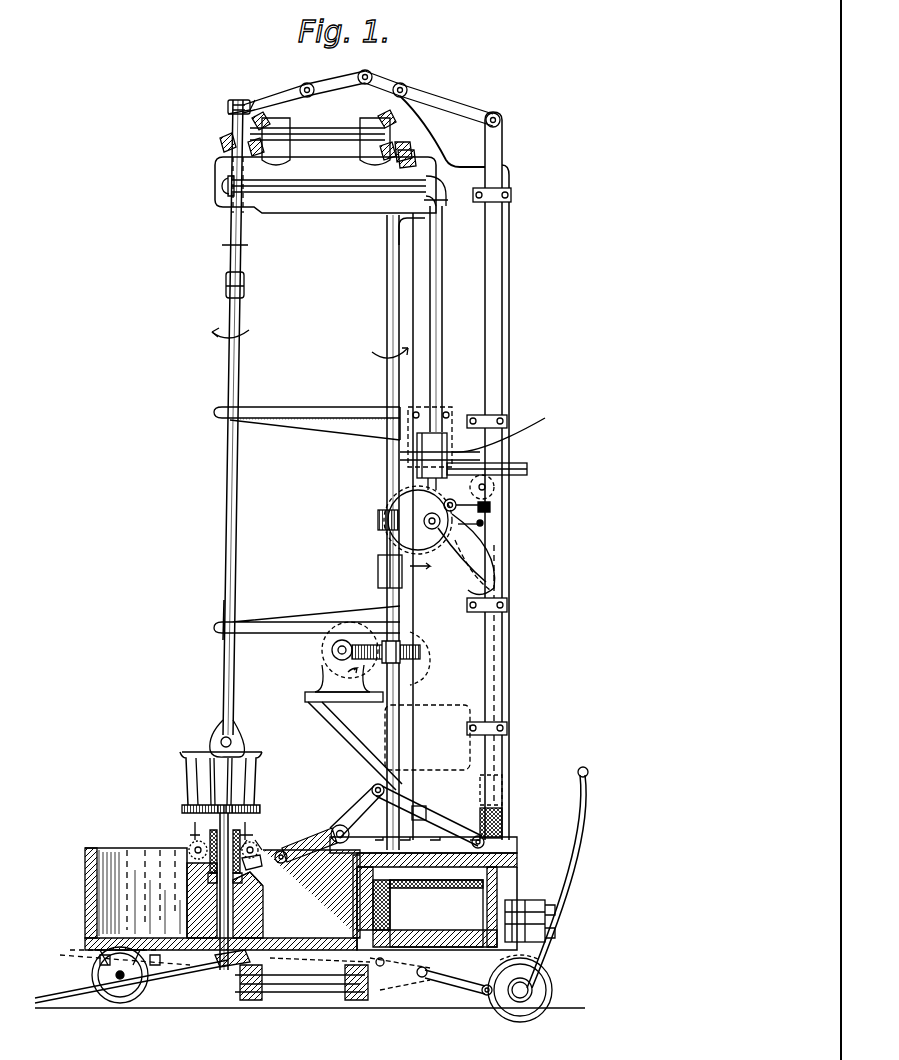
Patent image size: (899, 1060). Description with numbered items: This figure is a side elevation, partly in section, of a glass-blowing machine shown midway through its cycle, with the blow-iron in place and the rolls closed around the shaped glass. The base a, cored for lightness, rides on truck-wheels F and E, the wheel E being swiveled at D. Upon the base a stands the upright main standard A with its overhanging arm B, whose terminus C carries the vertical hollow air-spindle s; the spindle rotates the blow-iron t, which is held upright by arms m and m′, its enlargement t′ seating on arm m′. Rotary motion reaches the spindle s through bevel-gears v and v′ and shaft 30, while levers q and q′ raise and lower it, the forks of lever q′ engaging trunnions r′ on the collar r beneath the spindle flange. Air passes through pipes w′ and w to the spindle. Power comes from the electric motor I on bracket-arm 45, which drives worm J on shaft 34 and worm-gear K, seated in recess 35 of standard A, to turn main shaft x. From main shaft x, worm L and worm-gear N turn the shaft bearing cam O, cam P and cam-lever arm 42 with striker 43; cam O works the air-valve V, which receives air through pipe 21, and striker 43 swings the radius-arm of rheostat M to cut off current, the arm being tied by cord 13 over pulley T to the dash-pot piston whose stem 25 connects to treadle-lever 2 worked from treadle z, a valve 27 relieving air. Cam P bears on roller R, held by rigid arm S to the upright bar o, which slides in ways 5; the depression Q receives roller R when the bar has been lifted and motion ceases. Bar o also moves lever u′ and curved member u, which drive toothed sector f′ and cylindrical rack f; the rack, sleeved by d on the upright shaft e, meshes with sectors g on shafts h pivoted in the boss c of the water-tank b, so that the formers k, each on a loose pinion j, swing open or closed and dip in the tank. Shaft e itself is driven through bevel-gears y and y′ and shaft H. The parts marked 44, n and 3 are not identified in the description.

The lever q′ is at (307, 91).
The lever q is at (432, 119).
The collar r is at (227, 111).
The trunnions r′ is at (229, 119).
The shaft 30 is at (320, 137).
The bevel-gear v′ is at (383, 132).
The bevel-gear v is at (405, 150).
The blow-iron t is at (227, 428).
The air-spindle s is at (226, 283).
The terminus of overhanging arm C is at (316, 185).
The overhanging arm B is at (370, 230).
The pipe w′ is at (335, 184).
The pipe w is at (448, 319).
The main standard A is at (471, 526).
The main shaft x is at (386, 532).
The upright reciprocating bar o is at (490, 362).
The cord or chain 13 is at (496, 688).
The boxes or ways 5 is at (513, 722).
The arm m is at (307, 412).
The arm m′ is at (307, 613).
The enlargement t′ is at (224, 625).
The rheostat M is at (437, 434).
The air-valve V is at (473, 429).
The pulley T is at (510, 463).
The pipe 21 is at (494, 483).
The roller R is at (412, 505).
The cam O is at (415, 510).
The rigid arm S is at (490, 508).
The striker 43 is at (484, 522).
The cam-lever arm 42 is at (482, 530).
The worm L is at (376, 524).
The shaft 44 is at (392, 540).
The worm-gear N is at (378, 563).
The depression Q is at (452, 555).
The cam P is at (470, 575).
The shaft 34 is at (330, 648).
The worm J is at (330, 652).
The worm-gear K is at (420, 656).
The recess 35 is at (412, 640).
The electric motor I is at (318, 680).
The bracket-arm 45 is at (389, 746).
The lever u′ is at (355, 810).
The lever u is at (312, 847).
The pivot n is at (487, 843).
The stem 25 is at (500, 818).
The valve 27 is at (503, 784).
The upright shaft e is at (330, 938).
The base a is at (125, 893).
The tank b is at (142, 862).
The sleeve d is at (240, 900).
The central boss or hub c is at (263, 912).
The cylindrical rack f is at (210, 868).
The toothed sector f′ is at (262, 860).
The toothed sectors g is at (286, 828).
The shafts h is at (223, 830).
The loose pinion j is at (215, 809).
The rolls or formers k is at (219, 782).
The truck-wheel F is at (109, 985).
The truck-wheel E is at (538, 894).
The swivel D is at (530, 915).
The treadle z is at (131, 976).
The bracket 3 is at (141, 981).
The shaft H is at (300, 999).
The bevel-gear y′ is at (356, 997).
The bevel-gear y is at (350, 979).
The treadle-lever 2 is at (454, 986).